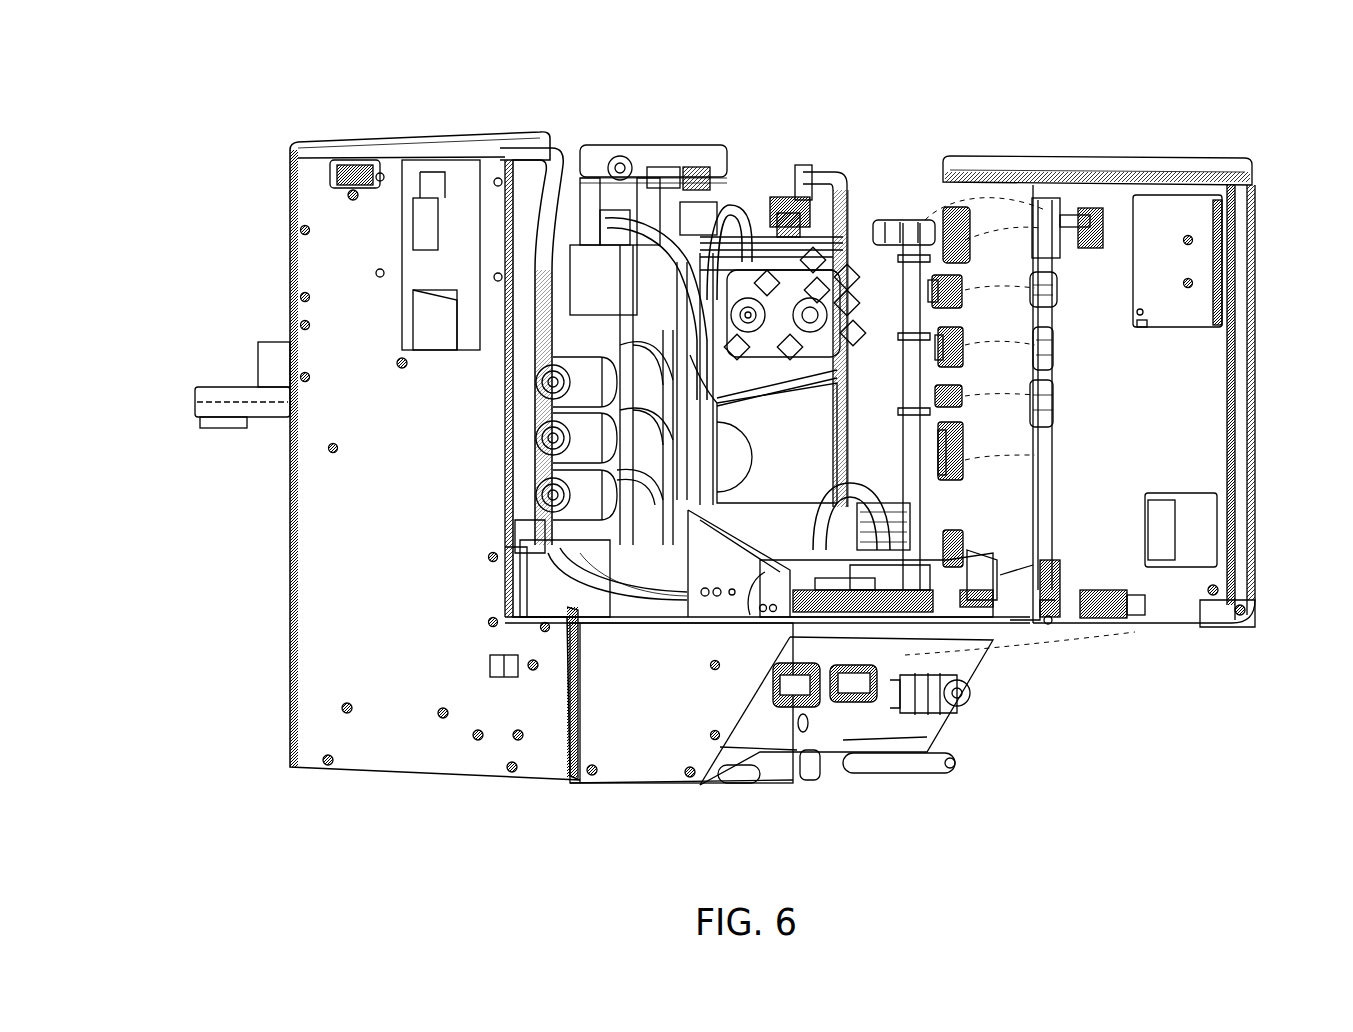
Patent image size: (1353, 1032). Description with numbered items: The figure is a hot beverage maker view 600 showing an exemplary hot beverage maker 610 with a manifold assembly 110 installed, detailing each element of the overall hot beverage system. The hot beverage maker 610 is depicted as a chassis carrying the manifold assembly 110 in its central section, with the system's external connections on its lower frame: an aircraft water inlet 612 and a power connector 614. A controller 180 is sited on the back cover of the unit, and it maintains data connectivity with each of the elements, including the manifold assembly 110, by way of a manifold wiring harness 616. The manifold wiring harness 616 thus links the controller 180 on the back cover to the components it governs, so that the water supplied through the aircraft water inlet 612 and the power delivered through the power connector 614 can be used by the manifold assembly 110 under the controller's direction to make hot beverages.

The hot beverage maker view 600 is at (113, 91).
The valve manifold assembly 110 is at (528, 450).
The hot beverage maker 610 is at (312, 569).
The controller 180 is at (1190, 265).
The manifold wiring harness 616 is at (963, 438).
The aircraft water inlet 612 is at (958, 707).
The power connector 614 is at (827, 707).